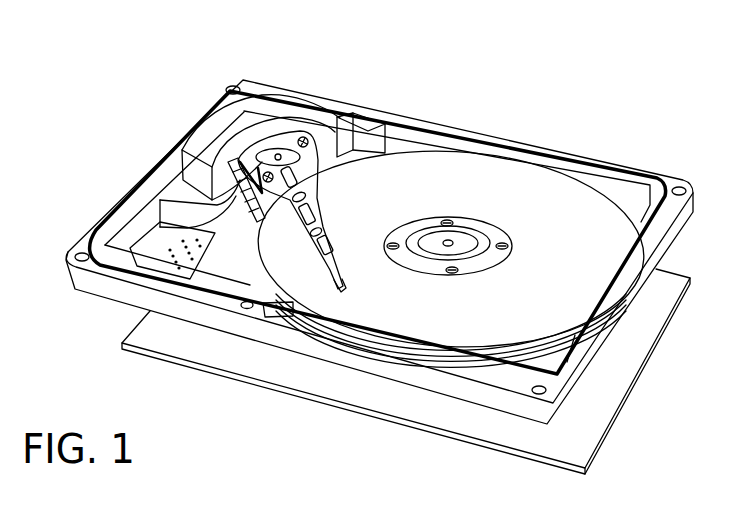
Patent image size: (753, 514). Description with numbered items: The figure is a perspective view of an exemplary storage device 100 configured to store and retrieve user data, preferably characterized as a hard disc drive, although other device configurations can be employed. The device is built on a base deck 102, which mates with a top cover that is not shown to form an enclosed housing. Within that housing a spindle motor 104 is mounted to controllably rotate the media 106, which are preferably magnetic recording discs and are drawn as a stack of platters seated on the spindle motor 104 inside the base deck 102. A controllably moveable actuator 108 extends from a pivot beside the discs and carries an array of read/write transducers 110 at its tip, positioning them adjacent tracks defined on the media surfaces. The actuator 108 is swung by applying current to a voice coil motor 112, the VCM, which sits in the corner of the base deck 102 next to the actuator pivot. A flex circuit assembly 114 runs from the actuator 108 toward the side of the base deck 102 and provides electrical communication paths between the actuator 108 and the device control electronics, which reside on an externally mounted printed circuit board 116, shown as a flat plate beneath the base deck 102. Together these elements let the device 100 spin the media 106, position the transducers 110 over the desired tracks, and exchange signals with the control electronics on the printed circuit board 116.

The storage device 100 is at (100, 80).
The base deck 102 is at (610, 327).
The spindle motor 104 is at (460, 242).
The media 106 is at (473, 347).
The actuator 108 is at (330, 225).
The read/write transducers 110 is at (343, 285).
The voice coil motor 112 is at (262, 120).
The flex circuit assembly 114 is at (177, 203).
The printed circuit board 116 is at (530, 466).